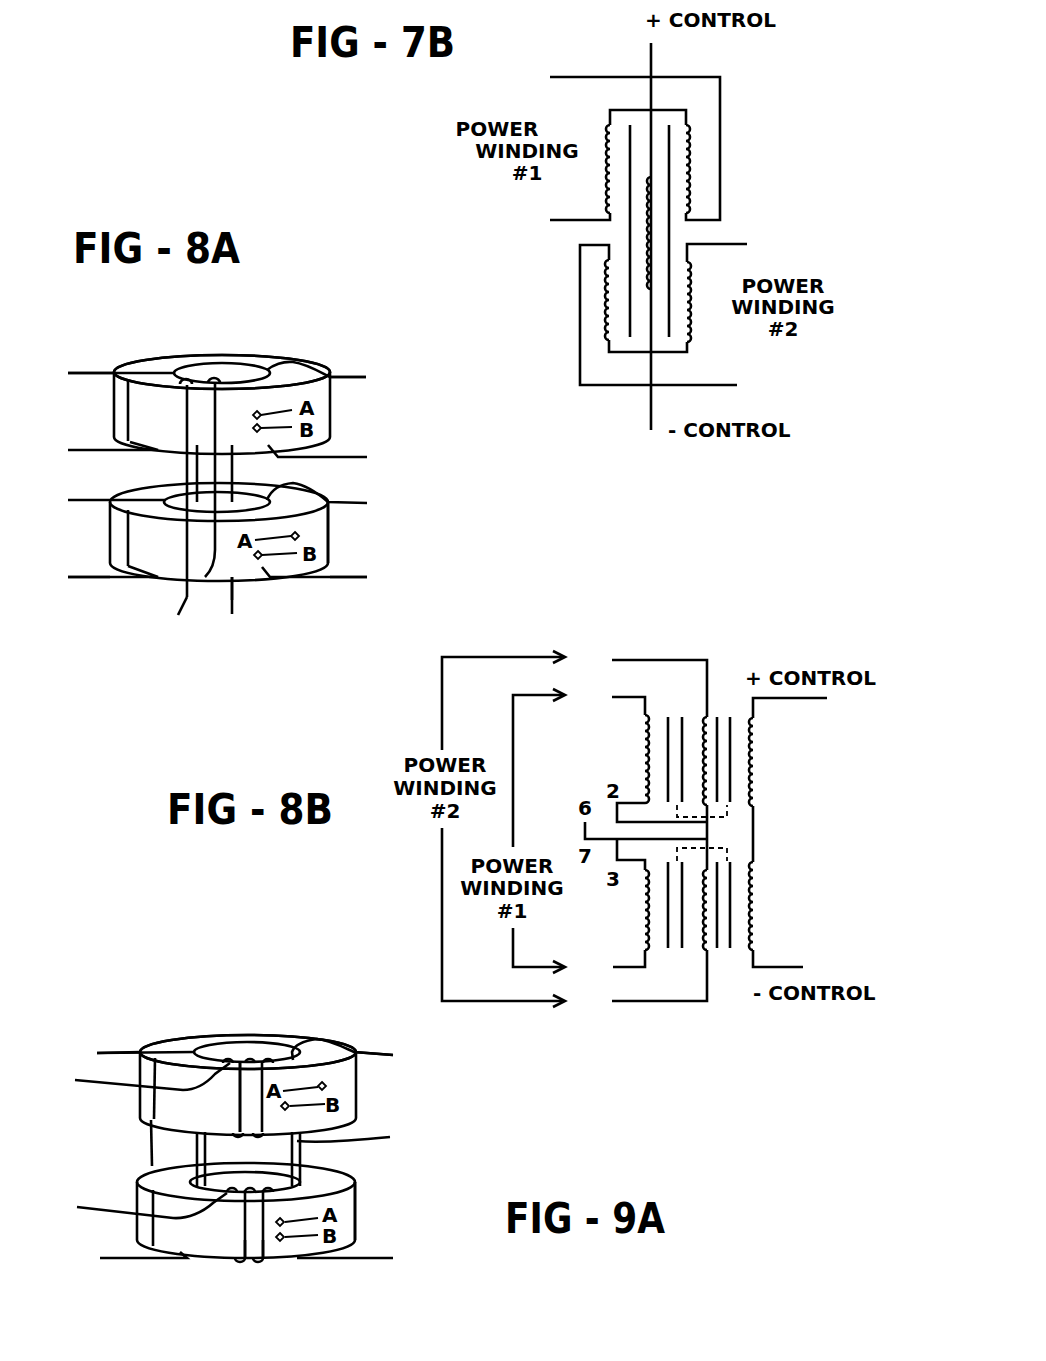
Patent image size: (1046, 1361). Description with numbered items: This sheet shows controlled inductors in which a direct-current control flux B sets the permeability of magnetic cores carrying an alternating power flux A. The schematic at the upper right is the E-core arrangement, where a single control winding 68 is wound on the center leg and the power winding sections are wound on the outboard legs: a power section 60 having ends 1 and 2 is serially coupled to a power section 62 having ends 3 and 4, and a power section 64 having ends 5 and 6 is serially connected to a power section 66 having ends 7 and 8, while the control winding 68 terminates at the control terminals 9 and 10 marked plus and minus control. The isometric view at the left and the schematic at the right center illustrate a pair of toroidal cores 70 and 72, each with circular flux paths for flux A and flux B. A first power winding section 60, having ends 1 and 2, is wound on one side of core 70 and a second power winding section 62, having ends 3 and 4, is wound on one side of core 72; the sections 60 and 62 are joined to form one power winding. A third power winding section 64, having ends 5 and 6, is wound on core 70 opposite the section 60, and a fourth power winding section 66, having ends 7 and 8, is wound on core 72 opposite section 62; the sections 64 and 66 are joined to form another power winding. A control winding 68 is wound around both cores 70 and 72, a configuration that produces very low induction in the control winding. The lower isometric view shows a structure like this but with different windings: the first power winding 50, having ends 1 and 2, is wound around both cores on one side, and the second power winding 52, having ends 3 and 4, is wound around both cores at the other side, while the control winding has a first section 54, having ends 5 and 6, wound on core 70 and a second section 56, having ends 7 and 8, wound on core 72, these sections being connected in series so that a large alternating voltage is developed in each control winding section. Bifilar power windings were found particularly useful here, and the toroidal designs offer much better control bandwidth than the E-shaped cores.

In FIG. 7B, the end 1 is at (539, 221).
In FIG. 8A, the end 1 is at (111, 374).
In FIG. 8B, the end 1 is at (134, 1049).
In FIG. 9A, the end 1 is at (587, 696).
In FIG. 7B, the end 2 is at (597, 108).
In FIG. 8A, the end 2 is at (103, 451).
In FIG. 8B, the end 2 is at (132, 1259).
In FIG. 7B, the end 3 is at (703, 111).
In FIG. 8A, the end 3 is at (103, 578).
In FIG. 8B, the end 3 is at (349, 1054).
In FIG. 7B, the end 4 is at (537, 79).
In FIG. 8A, the end 4 is at (106, 501).
In FIG. 8B, the end 4 is at (353, 1259).
In FIG. 9A, the end 4 is at (587, 968).
In FIG. 7B, the end 5 is at (595, 358).
In FIG. 8A, the end 5 is at (324, 376).
In FIG. 8B, the end 5 is at (141, 1078).
In FIG. 9A, the end 5 is at (585, 658).
In FIG. 7B, the end 6 is at (752, 386).
In FIG. 8A, the end 6 is at (323, 458).
In FIG. 8B, the end 6 is at (353, 1136).
In FIG. 7B, the end 7 is at (762, 245).
In FIG. 8A, the end 7 is at (321, 578).
In FIG. 8B, the end 7 is at (270, 1262).
In FIG. 7B, the end 8 is at (704, 358).
In FIG. 8A, the end 8 is at (324, 499).
In FIG. 8B, the end 8 is at (140, 1205).
In FIG. 9A, the end 8 is at (585, 1002).
In FIG. 7B, the control terminal 9 is at (633, 58).
In FIG. 8A, the control terminal 9 is at (175, 615).
In FIG. 9A, the control terminal 9 is at (835, 699).
In FIG. 7B, the control terminal 10 is at (626, 430).
In FIG. 8A, the control terminal 10 is at (234, 606).
In FIG. 9A, the control terminal 10 is at (824, 968).
In FIG. 8B, the first power winding 50 is at (112, 1051).
In FIG. 8B, the second power winding 52 is at (373, 1052).
In FIG. 8B, the first section of control winding 54 is at (241, 1093).
In FIG. 8B, the second section of control winding 56 is at (242, 1260).
In FIG. 7B, the first power winding section 60 is at (612, 173).
In FIG. 8A, the first power winding section 60 is at (86, 372).
In FIG. 9A, the first power winding section 60 is at (647, 740).
In FIG. 7B, the second power winding section 62 is at (687, 160).
In FIG. 8A, the second power winding section 62 is at (95, 580).
In FIG. 9A, the second power winding section 62 is at (650, 907).
In FIG. 7B, the third power winding section 64 is at (609, 288).
In FIG. 8A, the third power winding section 64 is at (347, 376).
In FIG. 9A, the third power winding section 64 is at (700, 718).
In FIG. 7B, the fourth power winding section 66 is at (683, 262).
In FIG. 8A, the fourth power winding section 66 is at (333, 580).
In FIG. 9A, the fourth power winding section 66 is at (702, 940).
In FIG. 7B, the control winding 68 is at (652, 97).
In FIG. 8A, the control winding 68 is at (232, 598).
In FIG. 9A, the control winding 68 is at (757, 840).
In FIG. 8A, the toroidal core 70 is at (220, 356).
In FIG. 8B, the toroidal core 70 is at (256, 1037).
In FIG. 8A, the toroidal core 72 is at (328, 530).
In FIG. 8B, the toroidal core 72 is at (355, 1213).